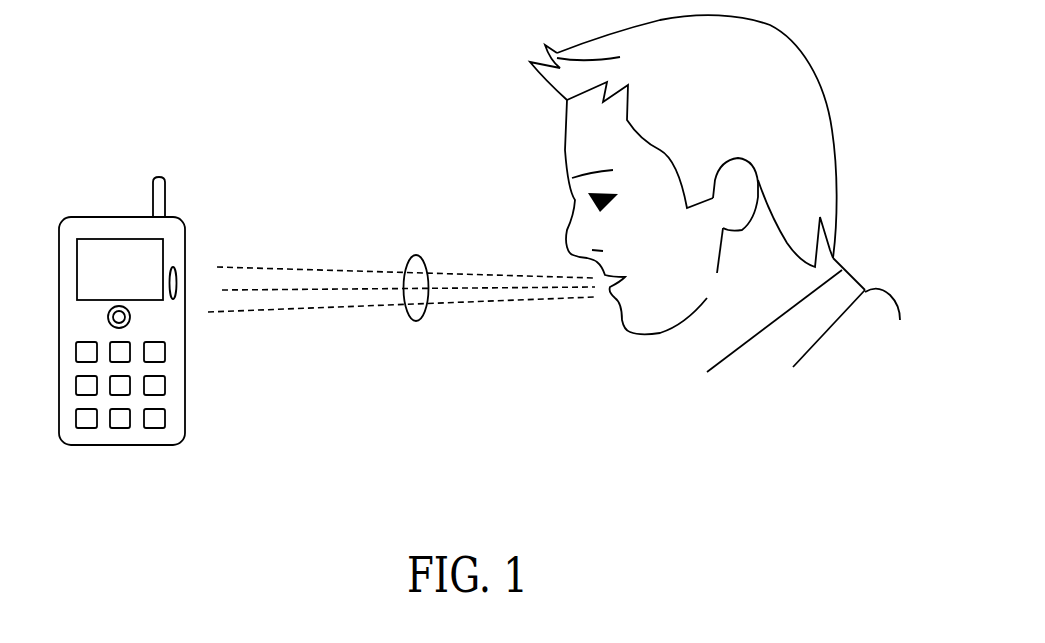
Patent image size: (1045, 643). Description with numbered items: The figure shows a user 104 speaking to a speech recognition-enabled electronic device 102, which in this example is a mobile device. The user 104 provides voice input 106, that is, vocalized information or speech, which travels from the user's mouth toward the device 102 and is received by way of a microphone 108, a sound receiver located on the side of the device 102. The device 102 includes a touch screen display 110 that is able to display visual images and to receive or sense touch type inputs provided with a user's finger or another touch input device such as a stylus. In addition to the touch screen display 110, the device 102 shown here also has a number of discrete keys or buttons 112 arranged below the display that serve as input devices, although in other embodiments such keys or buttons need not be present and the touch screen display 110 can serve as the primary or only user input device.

The speech recognition-enabled electronic device 102 is at (117, 311).
The user 104 is at (879, 78).
The voice input 106 is at (420, 322).
The microphone 108 is at (182, 282).
The touch screen display 110 is at (123, 277).
The discrete keys or buttons 112 is at (72, 317).